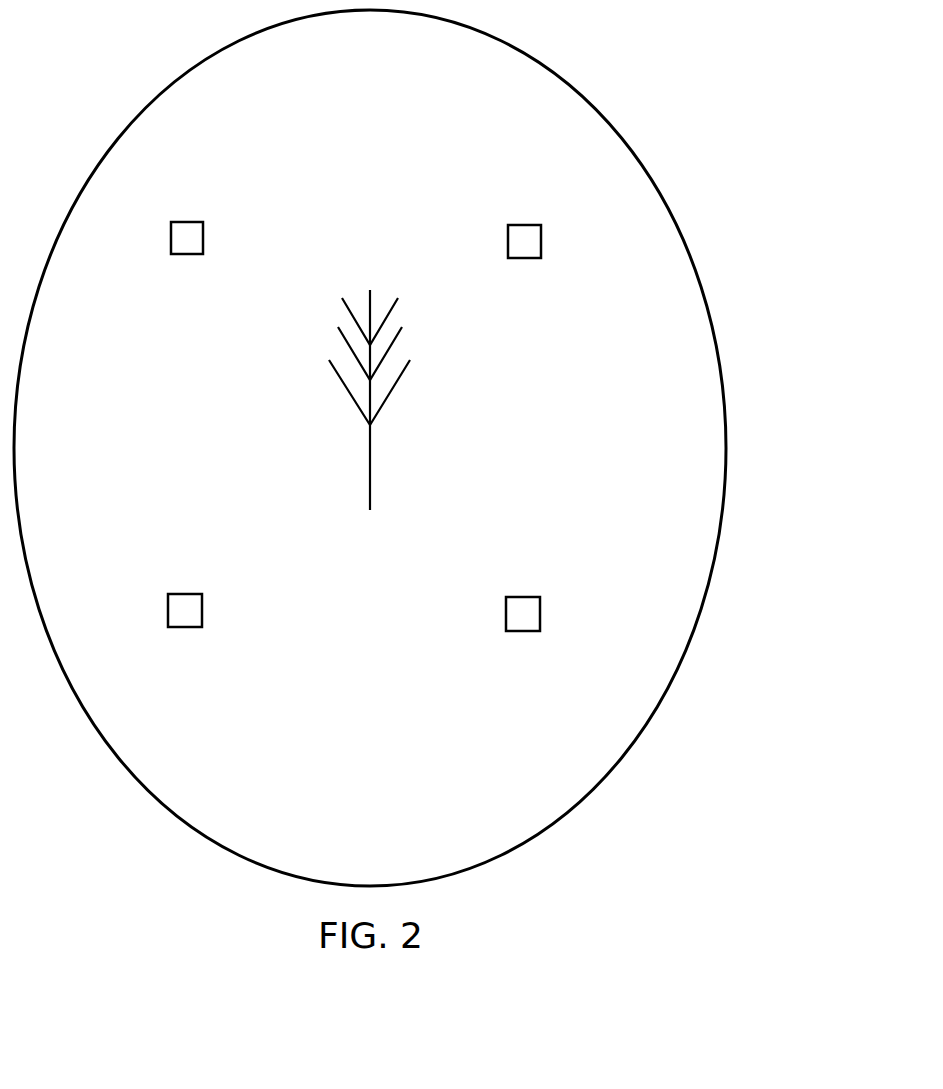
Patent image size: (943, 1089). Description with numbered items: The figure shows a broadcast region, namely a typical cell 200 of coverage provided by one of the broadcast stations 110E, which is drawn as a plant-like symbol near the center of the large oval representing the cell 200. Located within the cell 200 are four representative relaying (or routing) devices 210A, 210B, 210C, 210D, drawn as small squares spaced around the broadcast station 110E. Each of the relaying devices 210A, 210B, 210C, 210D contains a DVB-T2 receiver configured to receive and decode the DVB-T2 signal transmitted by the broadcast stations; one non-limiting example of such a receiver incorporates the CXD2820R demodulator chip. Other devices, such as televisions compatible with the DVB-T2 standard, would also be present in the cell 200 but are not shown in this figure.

The cell 200 is at (692, 133).
The relaying device 210A is at (203, 238).
The relaying device 210B is at (202, 610).
The relaying device 210C is at (541, 241).
The relaying device 210D is at (540, 613).
The broadcast station 110E is at (370, 477).